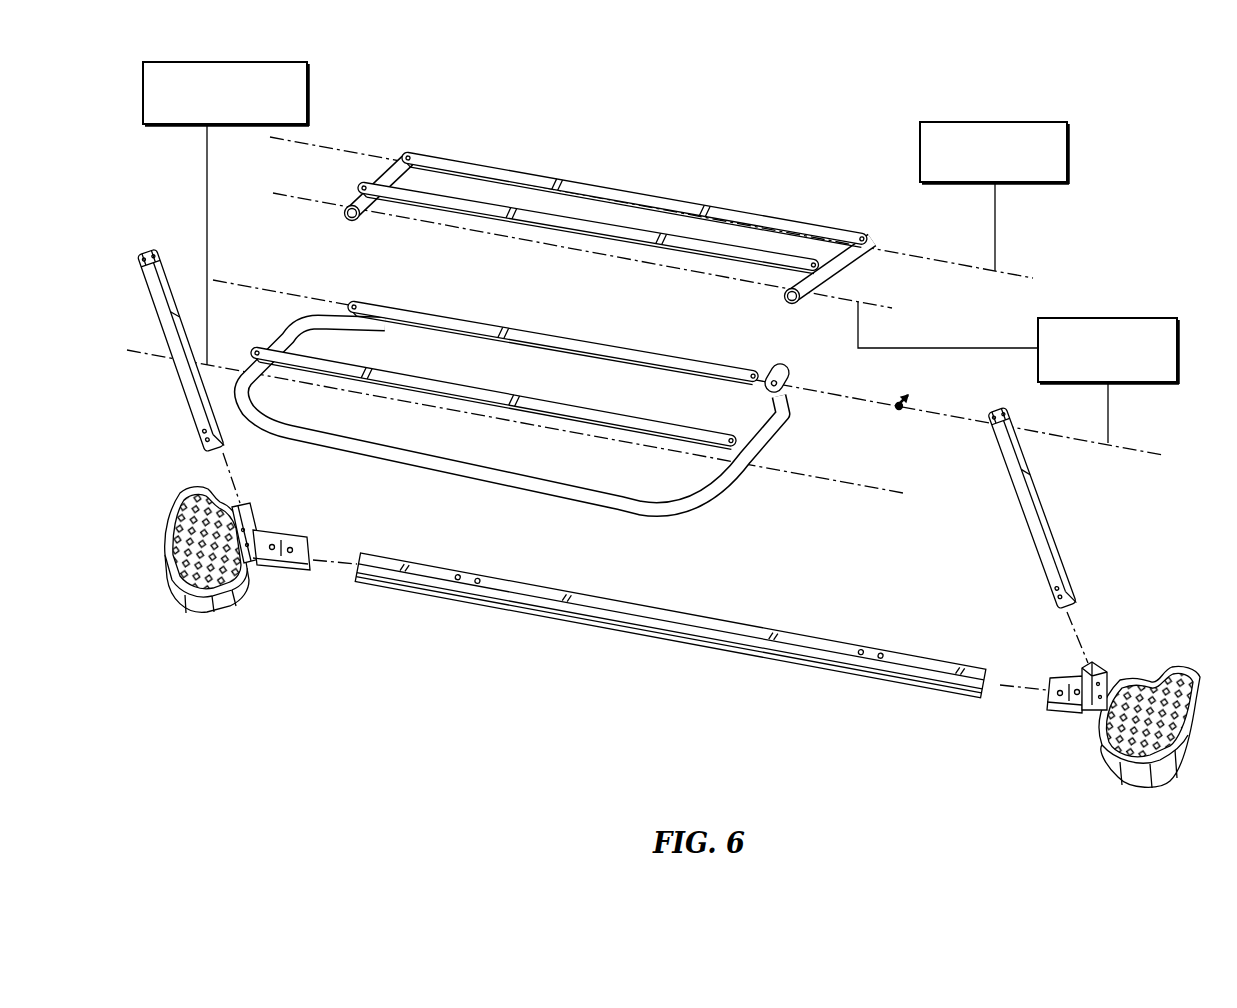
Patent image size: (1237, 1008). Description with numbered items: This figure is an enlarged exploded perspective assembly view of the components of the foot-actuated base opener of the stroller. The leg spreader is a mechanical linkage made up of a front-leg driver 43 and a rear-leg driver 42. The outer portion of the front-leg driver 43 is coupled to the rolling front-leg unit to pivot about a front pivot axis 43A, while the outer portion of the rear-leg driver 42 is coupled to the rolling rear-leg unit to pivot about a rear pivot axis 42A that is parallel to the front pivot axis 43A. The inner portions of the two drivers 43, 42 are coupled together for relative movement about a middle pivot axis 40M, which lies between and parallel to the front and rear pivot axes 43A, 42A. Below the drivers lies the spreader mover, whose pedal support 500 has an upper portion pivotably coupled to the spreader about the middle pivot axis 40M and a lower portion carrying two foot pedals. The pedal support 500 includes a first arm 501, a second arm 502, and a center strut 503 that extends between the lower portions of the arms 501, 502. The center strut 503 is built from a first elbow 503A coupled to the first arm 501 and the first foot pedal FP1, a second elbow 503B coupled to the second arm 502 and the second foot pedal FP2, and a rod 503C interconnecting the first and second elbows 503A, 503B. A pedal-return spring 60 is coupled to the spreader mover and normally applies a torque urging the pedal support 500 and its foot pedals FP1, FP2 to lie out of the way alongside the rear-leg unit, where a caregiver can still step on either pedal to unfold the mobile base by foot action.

The front pivot axis 43A is at (307, 97).
The rear pivot axis 42A is at (1067, 150).
The middle pivot axis 40M is at (1097, 318).
The rear-leg driver 42 is at (663, 191).
The front-leg driver 43 is at (664, 508).
The pedal-return spring 60 is at (900, 413).
The pedal support 500 is at (672, 552).
The first arm 501 is at (1046, 508).
The second arm 502 is at (171, 370).
The center strut 503 is at (669, 658).
The first elbow 503A is at (993, 702).
The second elbow 503B is at (280, 574).
The rod 503C is at (680, 643).
The first foot pedal FP1 is at (1113, 787).
The second foot pedal FP2 is at (196, 619).